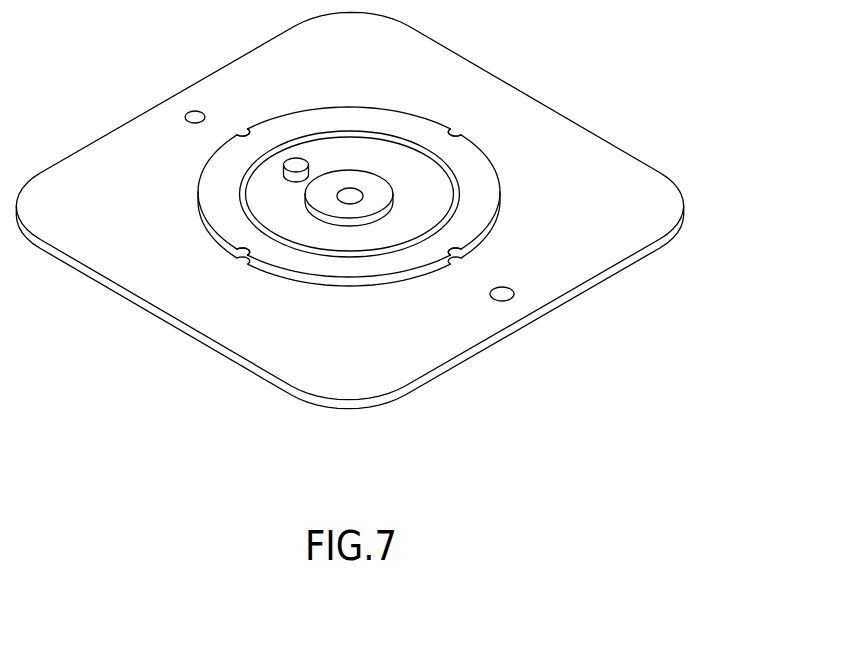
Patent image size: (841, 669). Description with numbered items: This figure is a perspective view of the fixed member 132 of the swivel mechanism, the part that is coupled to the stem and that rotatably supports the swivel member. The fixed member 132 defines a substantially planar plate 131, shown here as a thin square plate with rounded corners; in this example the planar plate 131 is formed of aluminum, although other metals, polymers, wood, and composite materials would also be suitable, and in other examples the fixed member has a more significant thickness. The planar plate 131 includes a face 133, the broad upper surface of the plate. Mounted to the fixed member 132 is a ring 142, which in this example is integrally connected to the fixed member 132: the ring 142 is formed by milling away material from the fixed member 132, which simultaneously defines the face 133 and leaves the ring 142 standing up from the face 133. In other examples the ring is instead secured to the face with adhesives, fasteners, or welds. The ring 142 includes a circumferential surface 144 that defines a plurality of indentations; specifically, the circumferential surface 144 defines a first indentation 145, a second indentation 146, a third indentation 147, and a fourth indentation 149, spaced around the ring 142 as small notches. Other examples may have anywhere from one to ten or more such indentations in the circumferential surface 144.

The planar plate 131 is at (653, 246).
The fixed member 132 is at (660, 132).
The face 133 is at (667, 198).
The ring 142 is at (374, 116).
The circumferential surface 144 is at (348, 288).
The first indentation 145 is at (467, 117).
The second indentation 146 is at (458, 256).
The third indentation 147 is at (245, 262).
The fourth indentation 149 is at (247, 134).